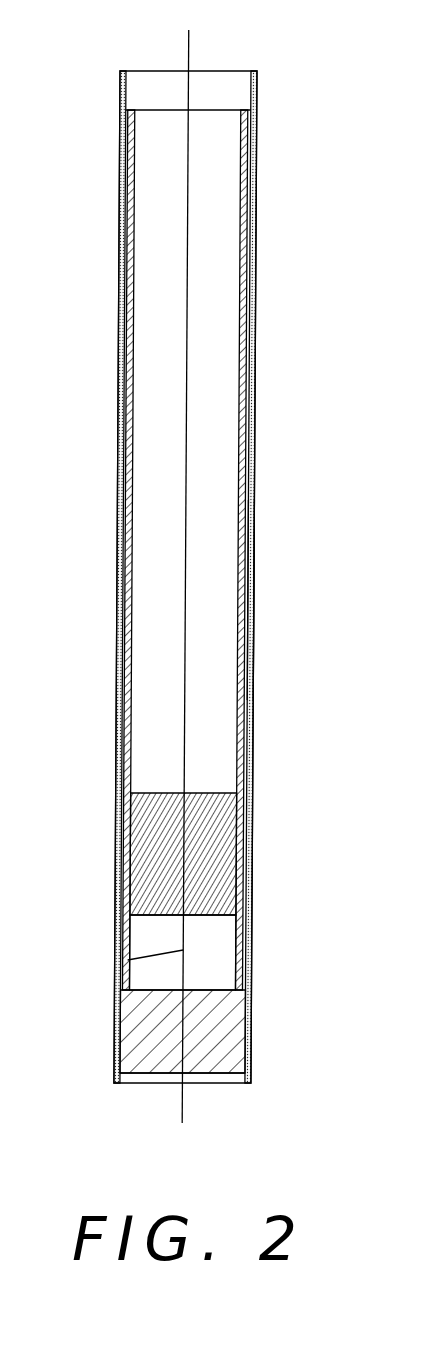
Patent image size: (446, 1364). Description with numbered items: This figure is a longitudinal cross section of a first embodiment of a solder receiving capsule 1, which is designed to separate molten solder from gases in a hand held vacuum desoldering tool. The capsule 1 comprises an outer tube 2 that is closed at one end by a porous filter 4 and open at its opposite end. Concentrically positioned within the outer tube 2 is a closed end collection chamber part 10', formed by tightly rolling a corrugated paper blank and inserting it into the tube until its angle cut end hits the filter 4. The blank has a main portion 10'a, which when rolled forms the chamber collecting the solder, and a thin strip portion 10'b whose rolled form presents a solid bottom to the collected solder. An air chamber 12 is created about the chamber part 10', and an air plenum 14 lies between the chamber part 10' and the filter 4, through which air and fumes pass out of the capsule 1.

The solder receiving capsule 1 is at (108, 834).
The outer tube 2 is at (256, 597).
The porous filter 4 is at (157, 1004).
The collection chamber part 10' is at (149, 577).
The main portion 10'a is at (230, 550).
The thin strip portion 10'b is at (234, 854).
The air chamber 12 is at (128, 108).
The air plenum 14 is at (153, 973).